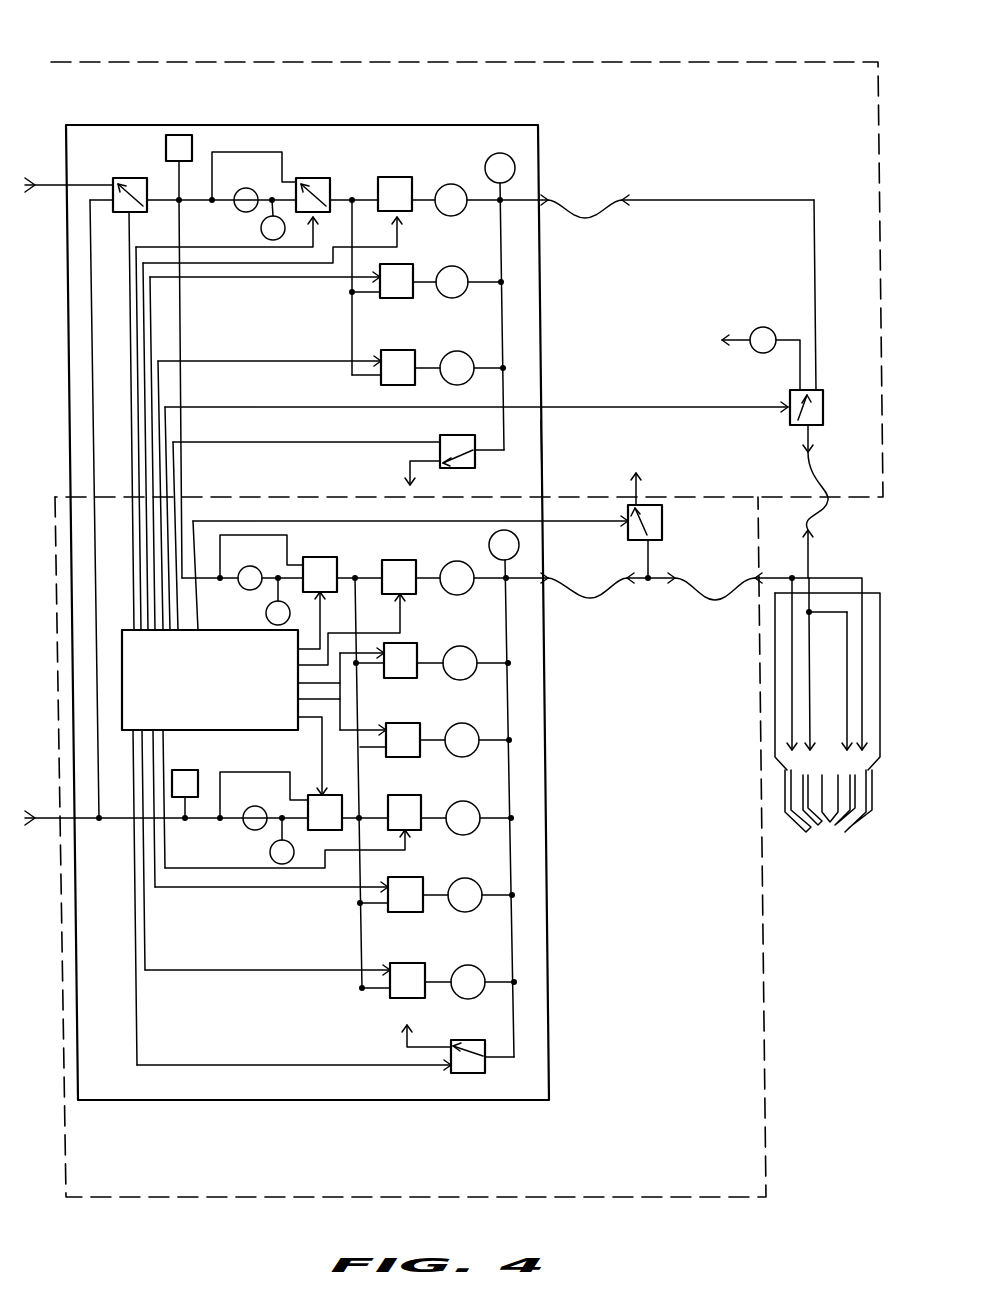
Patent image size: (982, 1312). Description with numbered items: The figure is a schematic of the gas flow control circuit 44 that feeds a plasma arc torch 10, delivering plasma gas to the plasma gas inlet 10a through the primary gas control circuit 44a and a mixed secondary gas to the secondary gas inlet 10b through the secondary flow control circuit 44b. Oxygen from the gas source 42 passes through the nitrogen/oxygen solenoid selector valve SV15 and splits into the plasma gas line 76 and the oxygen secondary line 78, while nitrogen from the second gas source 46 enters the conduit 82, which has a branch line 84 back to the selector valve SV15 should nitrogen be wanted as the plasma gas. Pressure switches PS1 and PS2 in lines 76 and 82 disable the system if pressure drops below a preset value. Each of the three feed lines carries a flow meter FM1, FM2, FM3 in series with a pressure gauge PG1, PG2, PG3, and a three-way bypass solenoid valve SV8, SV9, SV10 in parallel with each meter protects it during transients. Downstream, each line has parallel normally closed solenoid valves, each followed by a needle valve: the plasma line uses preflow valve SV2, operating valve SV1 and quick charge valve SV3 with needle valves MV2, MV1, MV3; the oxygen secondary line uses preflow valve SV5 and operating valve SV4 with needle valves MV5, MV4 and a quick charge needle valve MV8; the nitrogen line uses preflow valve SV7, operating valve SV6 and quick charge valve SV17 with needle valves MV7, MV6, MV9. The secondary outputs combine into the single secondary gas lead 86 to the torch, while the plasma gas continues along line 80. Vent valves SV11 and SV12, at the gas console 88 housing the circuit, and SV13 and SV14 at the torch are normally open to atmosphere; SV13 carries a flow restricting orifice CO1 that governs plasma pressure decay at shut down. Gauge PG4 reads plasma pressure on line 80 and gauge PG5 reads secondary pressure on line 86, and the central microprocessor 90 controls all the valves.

The torch 10 is at (888, 607).
The plasma gas inlet 10a is at (813, 612).
The secondary gas inlet 10b is at (793, 578).
The gas source 42 is at (35, 184).
The gas flow control circuit 44 is at (320, 92).
The primary gas control circuit 44a is at (506, 60).
The flow control circuit 44b is at (766, 920).
The source of a second gas 46 is at (55, 817).
The plasma gas flow line 76 is at (197, 199).
The secondary gas oxygen portion line 78 is at (183, 392).
The plasma gas line 80 is at (360, 182).
The conduit 82 is at (127, 820).
The branch line 84 is at (95, 580).
The secondary gas lead 86 is at (593, 596).
The gas console 88 is at (545, 452).
The central microprocessor 90 is at (215, 711).
The operating valve SV1 is at (390, 178).
The preflow valve SV2 is at (397, 265).
The quick charge valve SV3 is at (393, 350).
The operating valve SV4 is at (398, 560).
The preflow valve SV5 is at (402, 645).
The operating valve SV6 is at (396, 798).
The preflow valve SV7 is at (405, 879).
The bypass solenoid valve SV8 is at (311, 179).
The bypass solenoid valve SV9 is at (320, 559).
The bypass solenoid valve SV10 is at (338, 794).
The venting valve SV11 is at (344, 462).
The vent valve SV12 is at (332, 1054).
The venting valve SV13 is at (823, 398).
The vent valve SV14 is at (662, 521).
The nitrogen/oxygen solenoid selector valve SV15 is at (137, 178).
The quick charge valve SV17 is at (405, 963).
The needle valve MV1 is at (450, 184).
The needle valve MV2 is at (456, 266).
The needle valve MV3 is at (458, 351).
The needle valve MV4 is at (457, 562).
The needle valve MV5 is at (453, 650).
The needle valve MV6 is at (462, 805).
The needle valve MV7 is at (467, 890).
The needle valve MV8 is at (460, 728).
The needle valve MV9 is at (475, 968).
The pressure gauge PG1 is at (261, 228).
The pressure gauge PG2 is at (266, 613).
The pressure gauge PG3 is at (270, 852).
The pressure gauge PG4 is at (500, 153).
The pressure gauge PG5 is at (519, 547).
The flow meter FM1 is at (257, 167).
The flow meter FM2 is at (262, 557).
The flow meter FM3 is at (263, 795).
The pressure switch PS1 is at (175, 135).
The pressure switch PS2 is at (187, 770).
The flow restricting orifice CO1 is at (763, 327).